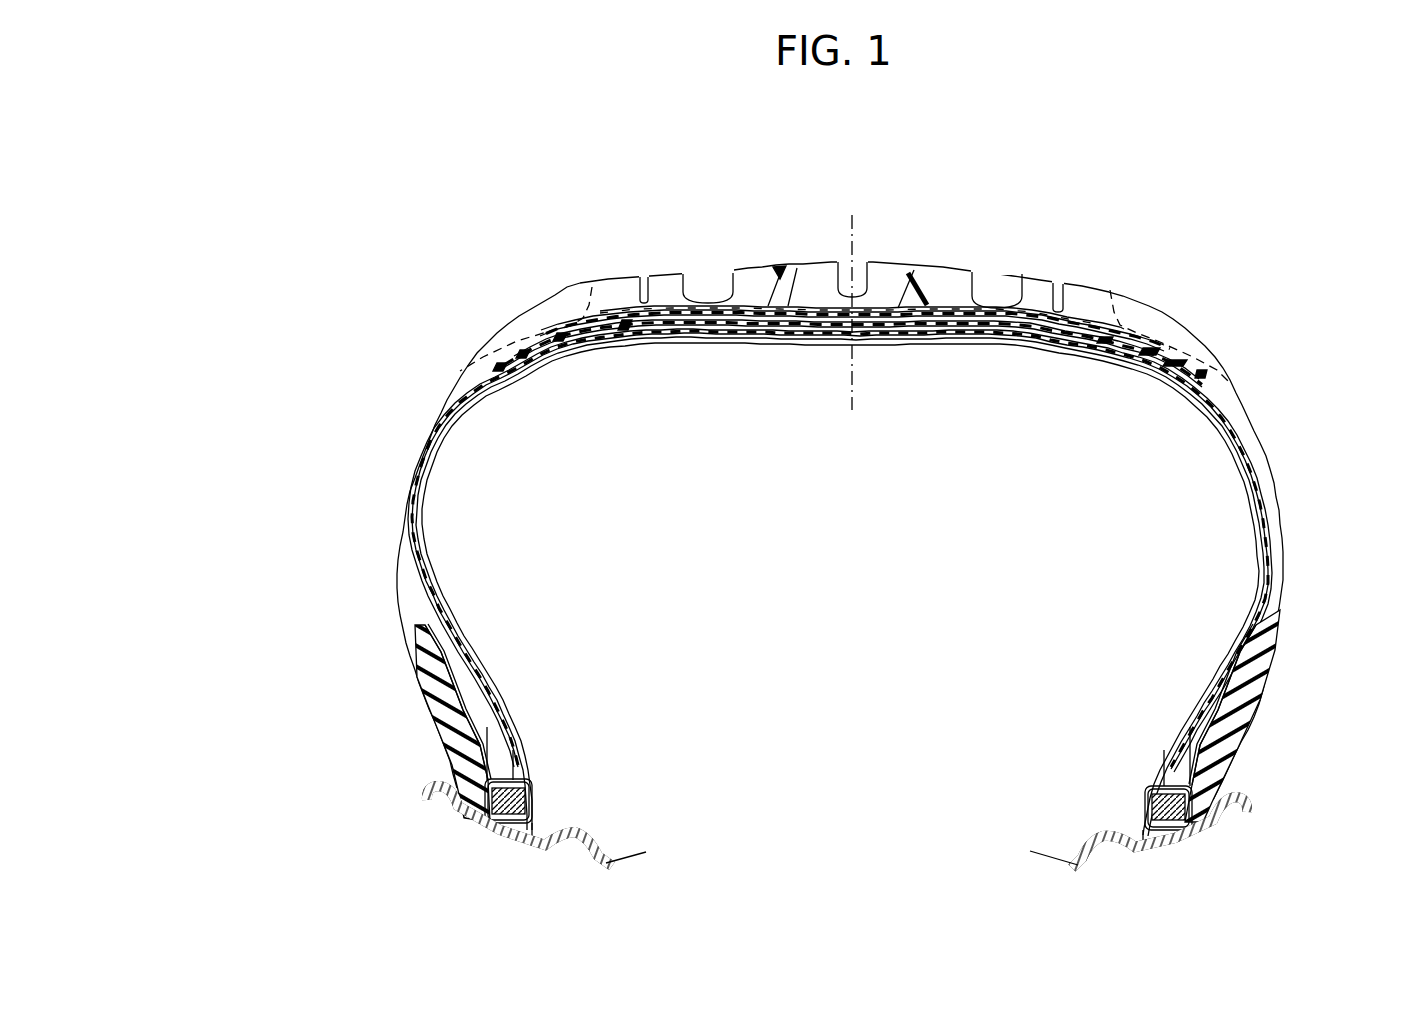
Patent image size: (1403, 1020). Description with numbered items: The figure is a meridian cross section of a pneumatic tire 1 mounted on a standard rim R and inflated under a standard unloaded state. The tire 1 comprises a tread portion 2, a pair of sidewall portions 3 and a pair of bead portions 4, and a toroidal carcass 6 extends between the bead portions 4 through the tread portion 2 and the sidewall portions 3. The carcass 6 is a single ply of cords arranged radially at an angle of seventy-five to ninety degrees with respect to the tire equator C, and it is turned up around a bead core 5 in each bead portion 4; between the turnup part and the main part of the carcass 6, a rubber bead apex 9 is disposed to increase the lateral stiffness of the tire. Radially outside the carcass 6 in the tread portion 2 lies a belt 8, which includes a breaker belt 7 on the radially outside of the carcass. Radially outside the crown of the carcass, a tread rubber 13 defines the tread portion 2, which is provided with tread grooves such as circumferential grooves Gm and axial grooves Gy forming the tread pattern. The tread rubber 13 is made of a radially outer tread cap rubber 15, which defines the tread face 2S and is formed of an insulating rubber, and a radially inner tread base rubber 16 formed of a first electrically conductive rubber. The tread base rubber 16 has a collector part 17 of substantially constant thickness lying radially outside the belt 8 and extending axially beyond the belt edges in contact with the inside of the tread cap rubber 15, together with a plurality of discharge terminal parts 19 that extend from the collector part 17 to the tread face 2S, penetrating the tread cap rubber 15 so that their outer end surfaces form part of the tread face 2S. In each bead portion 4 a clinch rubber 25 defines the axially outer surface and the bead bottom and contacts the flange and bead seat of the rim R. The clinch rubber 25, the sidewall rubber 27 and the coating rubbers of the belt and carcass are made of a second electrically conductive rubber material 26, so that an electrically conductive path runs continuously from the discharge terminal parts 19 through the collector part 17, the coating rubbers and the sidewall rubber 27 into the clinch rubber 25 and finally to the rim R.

The pneumatic tire 1 is at (1155, 263).
The tread portion 2 is at (874, 290).
The tread face 2S is at (967, 273).
The sidewall portions 3 is at (819, 541).
The bead portions 4 is at (840, 733).
The bead core 5 is at (530, 807).
The carcass 6 is at (463, 687).
The breaker belt 7 is at (737, 315).
The belt 8 is at (993, 327).
The bead apex 9 is at (500, 750).
The tread rubber 13 is at (850, 250).
The tread cap rubber 15 is at (676, 313).
The tread base rubber 16 is at (622, 328).
The collector part 17 is at (660, 286).
The discharge terminal parts 19 is at (793, 280).
The clinch rubber 25 is at (450, 740).
The second electrically conductive rubber material 26 is at (437, 453).
The sidewall rubber 27 is at (1263, 460).
The axial grooves Gy is at (530, 327).
The circumferential grooves Gm is at (862, 273).
The tire equator C is at (850, 400).
The standard rim R is at (537, 850).